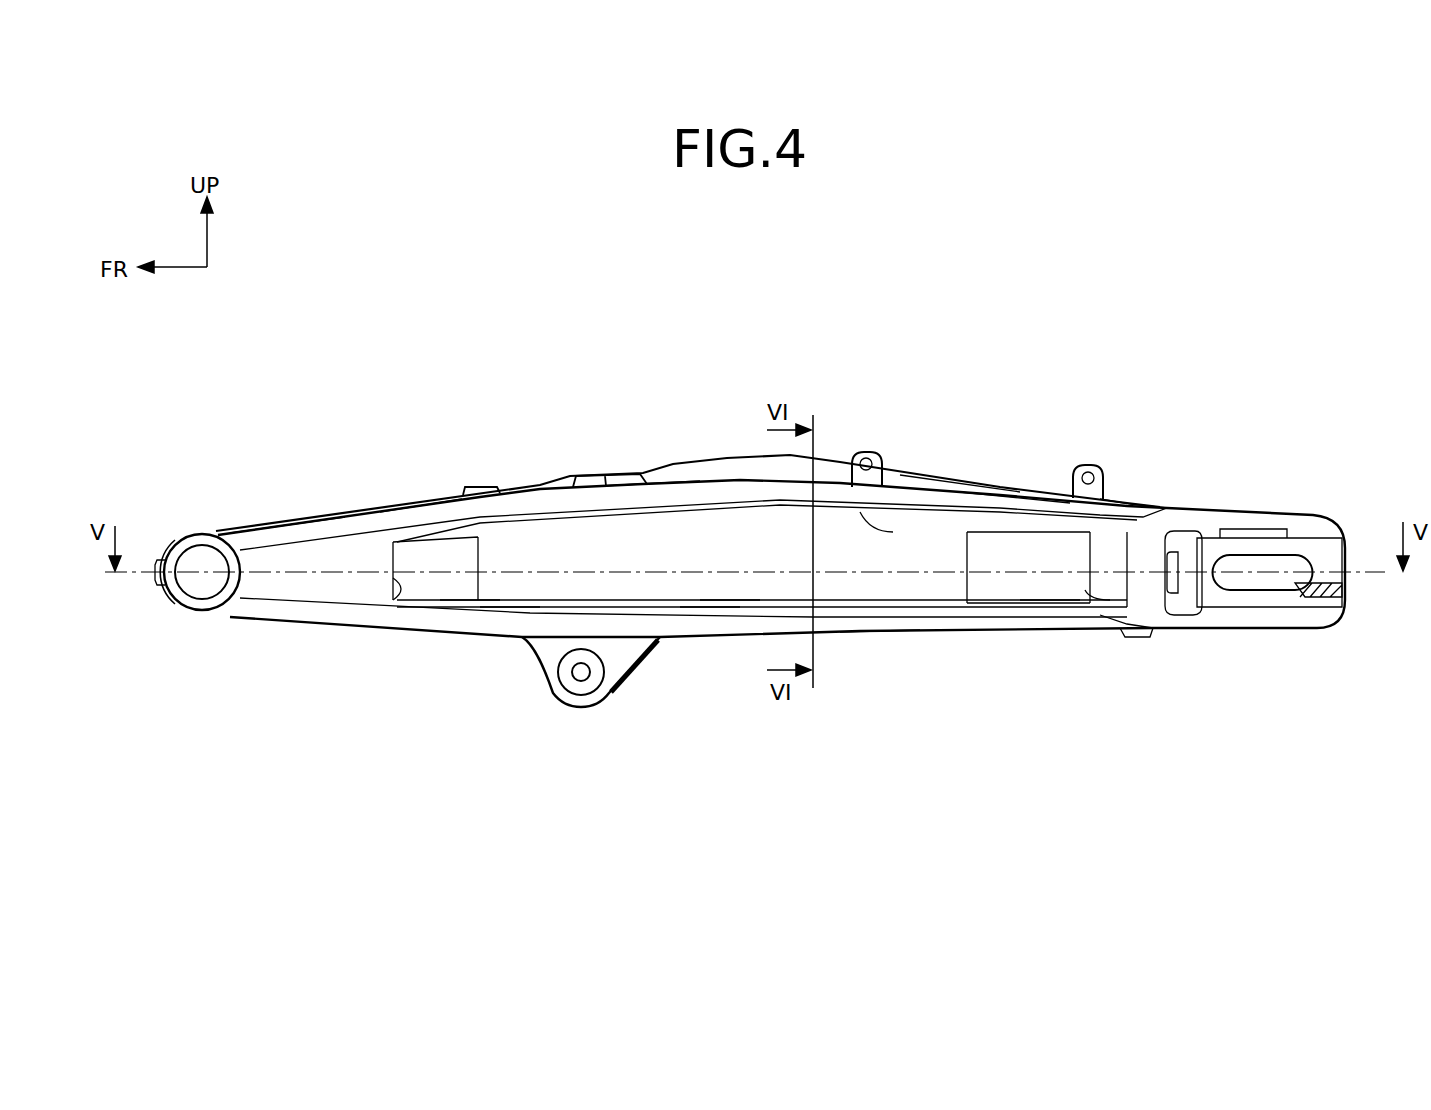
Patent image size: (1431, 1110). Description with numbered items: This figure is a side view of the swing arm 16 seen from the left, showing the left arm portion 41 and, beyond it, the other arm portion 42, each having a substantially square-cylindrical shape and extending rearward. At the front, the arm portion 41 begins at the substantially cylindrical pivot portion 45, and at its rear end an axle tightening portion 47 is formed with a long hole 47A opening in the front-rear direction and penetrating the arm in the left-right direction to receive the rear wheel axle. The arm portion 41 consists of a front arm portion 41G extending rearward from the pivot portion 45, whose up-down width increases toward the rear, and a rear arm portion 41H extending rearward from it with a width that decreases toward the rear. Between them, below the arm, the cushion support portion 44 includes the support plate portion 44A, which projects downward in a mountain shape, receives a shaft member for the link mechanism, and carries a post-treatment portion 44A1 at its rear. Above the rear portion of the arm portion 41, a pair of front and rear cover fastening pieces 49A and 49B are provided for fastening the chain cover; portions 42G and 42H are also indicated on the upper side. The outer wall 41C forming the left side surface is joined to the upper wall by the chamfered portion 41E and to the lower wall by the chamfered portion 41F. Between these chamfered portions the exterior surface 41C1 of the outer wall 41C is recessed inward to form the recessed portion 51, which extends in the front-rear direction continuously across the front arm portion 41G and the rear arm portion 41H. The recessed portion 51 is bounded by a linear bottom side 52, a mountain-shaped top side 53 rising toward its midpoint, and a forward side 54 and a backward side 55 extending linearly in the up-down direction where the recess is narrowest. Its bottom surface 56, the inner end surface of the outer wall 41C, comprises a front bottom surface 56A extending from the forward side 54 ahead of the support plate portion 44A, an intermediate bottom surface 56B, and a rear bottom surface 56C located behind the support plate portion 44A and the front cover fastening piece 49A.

The swing arm 16 is at (456, 336).
The arm portion 41 is at (755, 478).
The outer wall 41C is at (345, 532).
The exterior surface 41C1 is at (470, 590).
The chamfered portion 41E is at (657, 490).
The chamfered portion 41F is at (880, 625).
The front arm portion 41G is at (423, 498).
The rear arm portion 41H is at (1005, 492).
The arm portion 42 is at (703, 460).
The front engagement portion of cover 42G is at (512, 484).
The rear engagement portion of cover 42H is at (963, 467).
The cushion support portion 44 is at (633, 692).
The support plate portion 44A is at (574, 703).
The post-treatment portion 44A1 is at (650, 667).
The pivot portion 45 is at (200, 532).
The axle tightening portion 47 is at (1277, 622).
The long hole 47A is at (1265, 565).
The cover fastening piece 49A is at (866, 452).
The cover fastening piece 49B is at (1092, 465).
The recessed portion 51 is at (510, 595).
The bottom side 52 is at (727, 592).
The top side 53 is at (882, 537).
The forward side 54 is at (427, 590).
The backward side 55 is at (1090, 580).
The bottom surface 56 is at (910, 590).
The front bottom surface 56A is at (405, 600).
The intermediate bottom surface 56B is at (697, 590).
The rear bottom surface 56C is at (1047, 590).